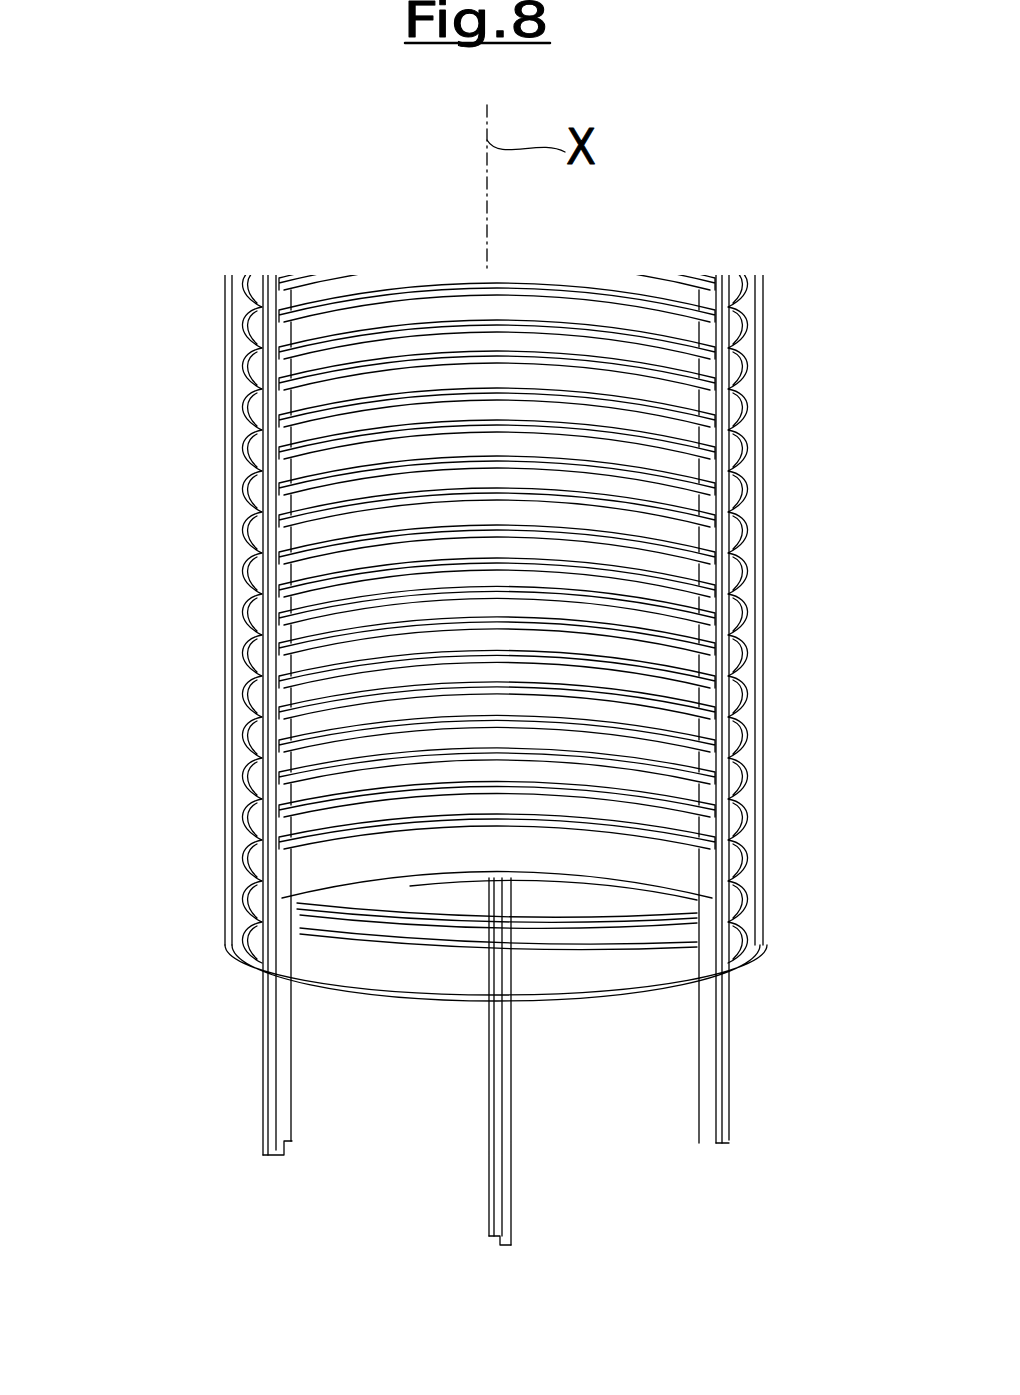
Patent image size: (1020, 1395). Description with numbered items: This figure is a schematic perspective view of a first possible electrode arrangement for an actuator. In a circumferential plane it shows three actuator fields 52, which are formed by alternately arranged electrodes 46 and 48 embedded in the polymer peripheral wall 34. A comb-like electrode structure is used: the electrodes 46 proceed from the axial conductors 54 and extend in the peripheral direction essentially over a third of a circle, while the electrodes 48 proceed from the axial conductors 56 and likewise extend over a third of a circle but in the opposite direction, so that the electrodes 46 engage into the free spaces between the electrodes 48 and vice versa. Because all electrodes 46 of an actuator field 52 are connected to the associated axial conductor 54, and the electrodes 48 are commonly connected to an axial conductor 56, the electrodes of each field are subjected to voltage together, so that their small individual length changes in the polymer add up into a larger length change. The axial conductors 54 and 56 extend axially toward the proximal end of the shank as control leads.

The peripheral wall 34 is at (745, 940).
The electrodes 46 is at (643, 835).
The electrodes 48 is at (335, 812).
The actuator fields 52 is at (410, 272).
The axial conductors 54 is at (268, 1137).
The axial conductors 56 is at (290, 1110).